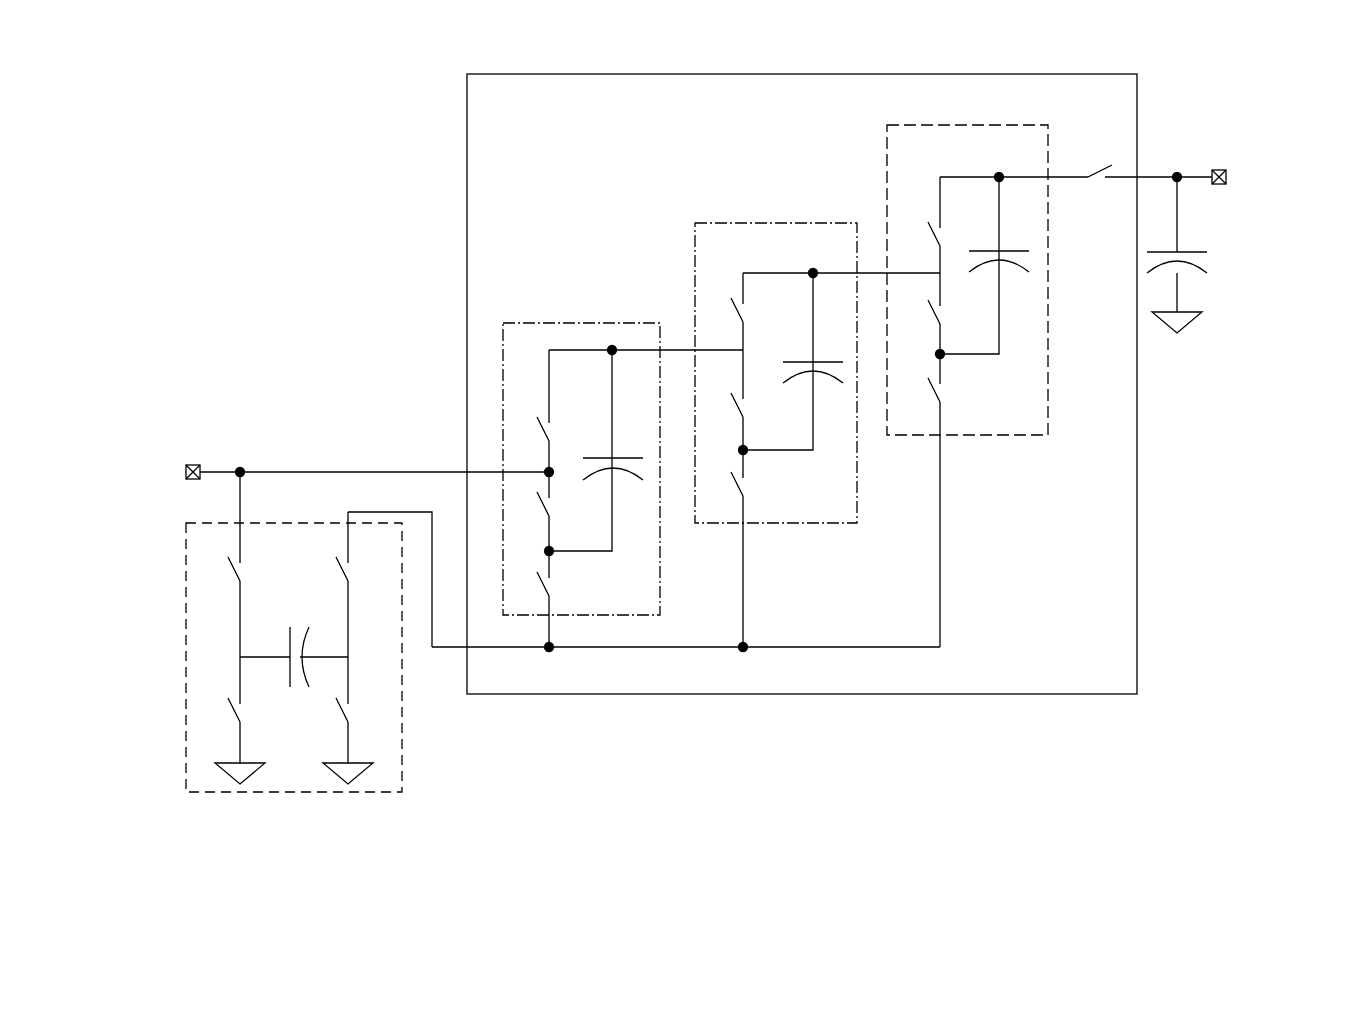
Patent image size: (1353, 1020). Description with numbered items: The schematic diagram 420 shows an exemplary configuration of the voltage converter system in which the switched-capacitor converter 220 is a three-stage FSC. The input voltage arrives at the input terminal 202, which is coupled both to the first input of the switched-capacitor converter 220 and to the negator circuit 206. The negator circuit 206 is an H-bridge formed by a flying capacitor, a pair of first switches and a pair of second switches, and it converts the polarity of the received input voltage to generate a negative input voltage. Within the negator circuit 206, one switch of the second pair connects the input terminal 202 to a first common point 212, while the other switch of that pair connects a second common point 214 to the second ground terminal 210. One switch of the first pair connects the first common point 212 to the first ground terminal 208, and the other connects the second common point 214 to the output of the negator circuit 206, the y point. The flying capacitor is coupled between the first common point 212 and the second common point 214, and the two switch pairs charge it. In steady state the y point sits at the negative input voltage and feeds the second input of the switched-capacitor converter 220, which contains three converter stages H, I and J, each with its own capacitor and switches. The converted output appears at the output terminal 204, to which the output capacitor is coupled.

The switched-capacitor power converter 420 is at (217, 112).
The switched-capacitor converter 220 is at (803, 73).
The input terminal 202 is at (186, 472).
The output terminal 204 is at (1226, 177).
The negator circuit 206 is at (186, 658).
The first ground terminal 208 is at (240, 792).
The second ground terminal 210 is at (348, 792).
The first common point 212 is at (231, 657).
The second common point 214 is at (365, 657).